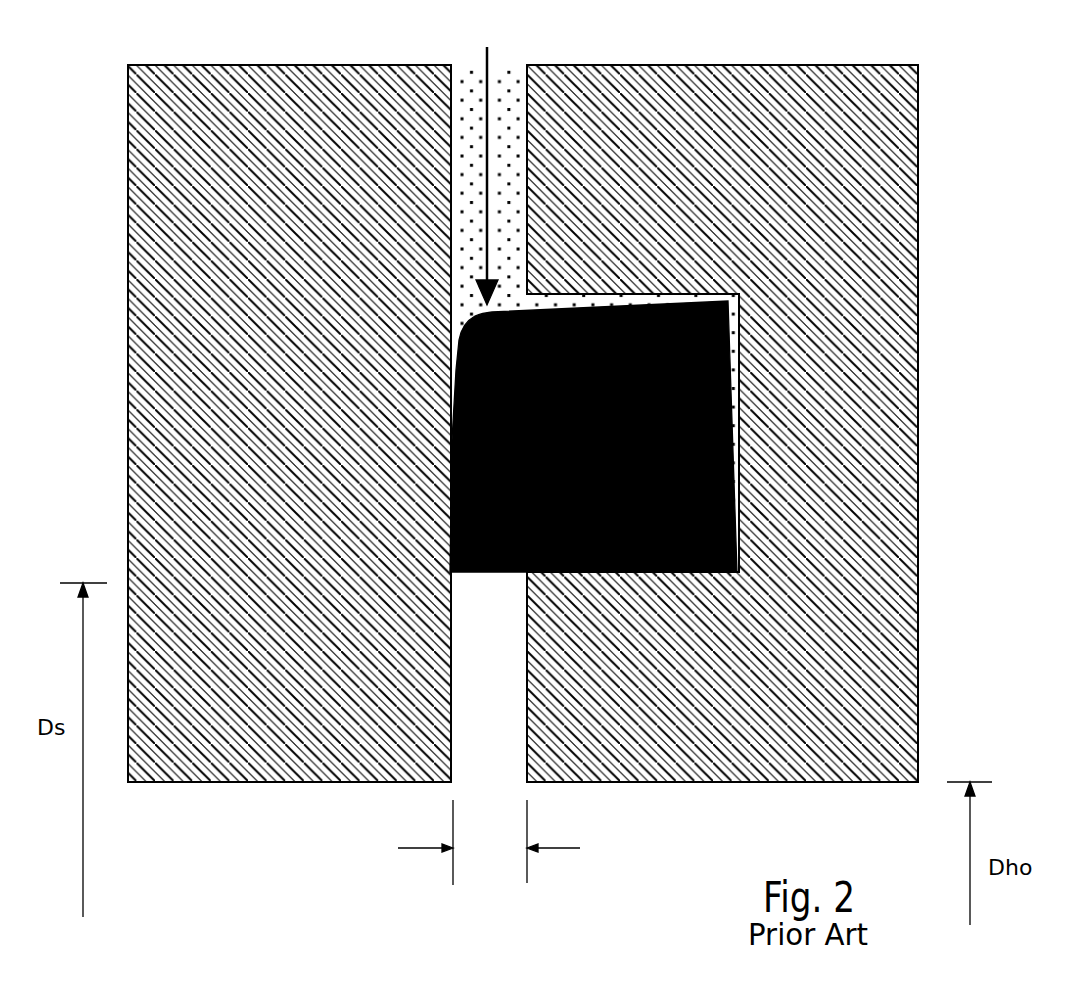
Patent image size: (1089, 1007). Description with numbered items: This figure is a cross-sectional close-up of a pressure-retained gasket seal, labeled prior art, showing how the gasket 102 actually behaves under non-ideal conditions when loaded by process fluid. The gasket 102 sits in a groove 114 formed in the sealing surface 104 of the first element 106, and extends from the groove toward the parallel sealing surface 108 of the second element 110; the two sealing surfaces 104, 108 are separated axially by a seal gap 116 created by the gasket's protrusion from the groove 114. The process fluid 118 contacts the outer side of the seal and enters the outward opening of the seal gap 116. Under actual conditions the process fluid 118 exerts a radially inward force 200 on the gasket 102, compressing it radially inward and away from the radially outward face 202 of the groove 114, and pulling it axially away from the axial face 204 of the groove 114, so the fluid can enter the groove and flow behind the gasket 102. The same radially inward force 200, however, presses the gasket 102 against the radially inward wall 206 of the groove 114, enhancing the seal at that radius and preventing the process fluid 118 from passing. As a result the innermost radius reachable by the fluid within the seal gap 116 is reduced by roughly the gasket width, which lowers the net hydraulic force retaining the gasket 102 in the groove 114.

The gasket 102 is at (614, 452).
The sealing surface 104 is at (538, 182).
The first element 106 is at (851, 664).
The sealing surface 108 is at (442, 182).
The second element 110 is at (336, 694).
The groove 114 is at (752, 431).
The seal gap 116 is at (513, 842).
The process fluid 118 is at (507, 146).
The radially inward force 200 is at (490, 72).
The radially outward face 202 is at (612, 294).
The axial face 204 is at (742, 336).
The radially inward wall 206 is at (628, 573).